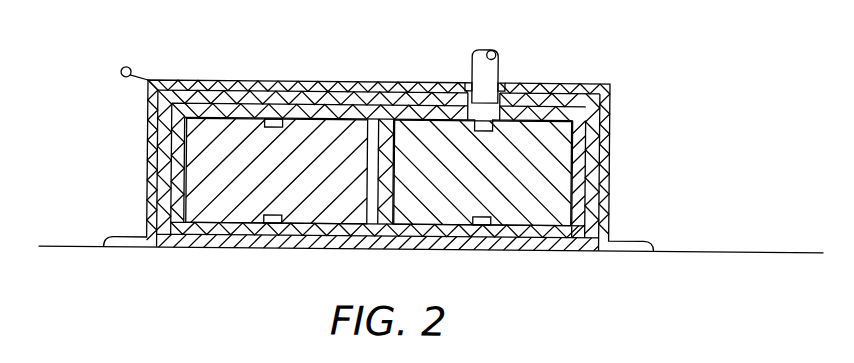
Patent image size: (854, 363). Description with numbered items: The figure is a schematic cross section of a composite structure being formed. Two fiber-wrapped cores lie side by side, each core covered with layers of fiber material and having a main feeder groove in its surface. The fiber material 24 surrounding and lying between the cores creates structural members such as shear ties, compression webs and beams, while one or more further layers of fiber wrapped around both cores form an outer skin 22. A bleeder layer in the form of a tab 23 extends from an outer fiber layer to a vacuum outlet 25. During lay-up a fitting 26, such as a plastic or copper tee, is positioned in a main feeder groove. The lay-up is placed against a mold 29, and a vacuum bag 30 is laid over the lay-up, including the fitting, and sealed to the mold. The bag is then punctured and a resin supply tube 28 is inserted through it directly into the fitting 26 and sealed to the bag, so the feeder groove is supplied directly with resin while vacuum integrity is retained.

The outer skin 22 is at (599, 101).
The tab 23 is at (148, 79).
The fiber material 24 is at (386, 105).
The vacuum outlet 25 is at (122, 68).
The fittings 26 is at (522, 93).
The resin supply tubes 28 is at (497, 52).
The mold 29 is at (690, 247).
The vacuum bag 30 is at (337, 85).